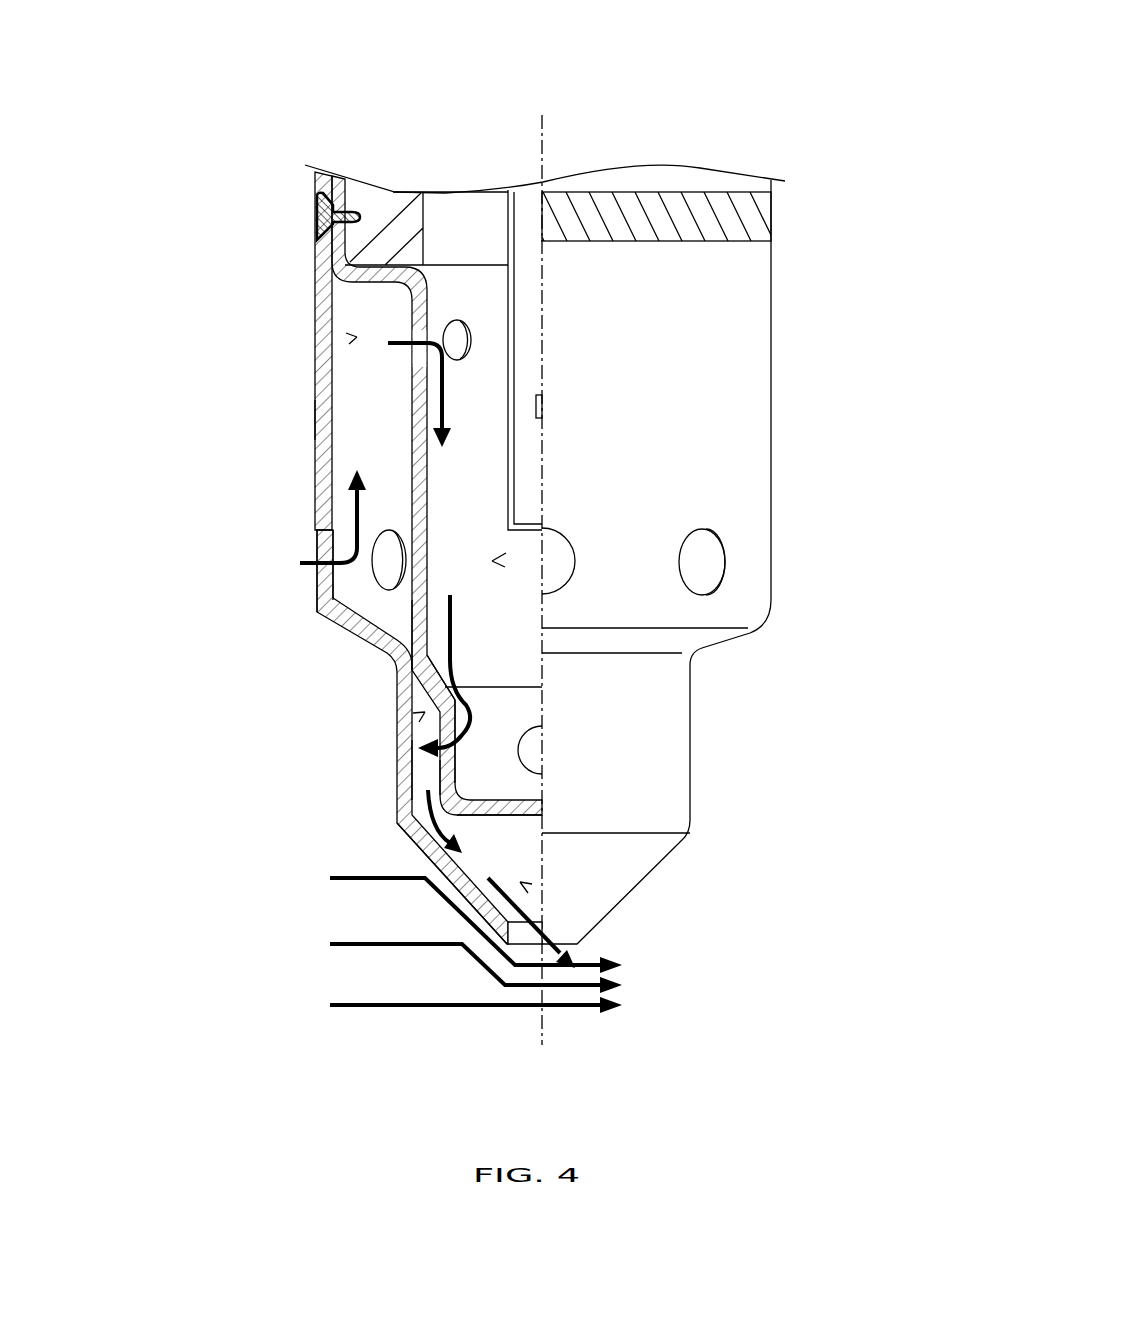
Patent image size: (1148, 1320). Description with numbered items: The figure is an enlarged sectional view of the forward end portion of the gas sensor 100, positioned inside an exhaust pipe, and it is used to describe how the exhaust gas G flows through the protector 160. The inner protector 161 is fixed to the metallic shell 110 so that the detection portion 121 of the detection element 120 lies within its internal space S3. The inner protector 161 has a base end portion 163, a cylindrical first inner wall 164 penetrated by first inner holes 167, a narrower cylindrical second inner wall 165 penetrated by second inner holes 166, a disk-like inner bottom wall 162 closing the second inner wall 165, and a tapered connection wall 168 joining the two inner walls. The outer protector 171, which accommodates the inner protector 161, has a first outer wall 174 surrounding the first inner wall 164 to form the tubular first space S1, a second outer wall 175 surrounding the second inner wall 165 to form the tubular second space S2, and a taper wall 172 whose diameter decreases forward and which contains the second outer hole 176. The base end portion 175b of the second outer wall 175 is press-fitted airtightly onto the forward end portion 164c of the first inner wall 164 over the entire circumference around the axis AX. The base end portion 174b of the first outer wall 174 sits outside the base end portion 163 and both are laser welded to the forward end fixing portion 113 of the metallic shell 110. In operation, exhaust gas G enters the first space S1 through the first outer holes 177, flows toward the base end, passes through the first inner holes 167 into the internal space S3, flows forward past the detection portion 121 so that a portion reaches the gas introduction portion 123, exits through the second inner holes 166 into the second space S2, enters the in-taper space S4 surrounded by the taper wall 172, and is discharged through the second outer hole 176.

The gas sensor 100 is at (680, 96).
The metallic shell 110 is at (387, 207).
The forward end fixing portion 113 is at (315, 283).
The detection element 120 is at (530, 342).
The detection portion 121 is at (533, 380).
The gas introduction portion 123 is at (541, 417).
The protector 160 is at (178, 440).
The inner protector 161 is at (412, 453).
The inner bottom wall 162 is at (513, 817).
The base end portion 163 is at (313, 182).
The first inner wall 164 is at (412, 388).
The forward end portion 164c is at (412, 614).
The second inner wall 165 is at (437, 763).
The second inner holes 166 is at (397, 757).
The first inner holes 167 is at (423, 305).
The connection wall 168 is at (440, 687).
The outer protector 171 is at (315, 457).
The taper wall 172 is at (397, 853).
The first outer wall 174 is at (322, 418).
The base end portion 174b is at (313, 250).
The second outer wall 175 is at (440, 677).
The base end portion 175b is at (412, 667).
The second outer hole 176 is at (520, 932).
The first outer holes 177 is at (378, 565).
The axis AX is at (540, 123).
The exhaust gas G is at (292, 563).
The first space S1 is at (357, 337).
The second space S2 is at (425, 712).
The internal space S3 is at (492, 561).
The in-taper space S4 is at (520, 882).